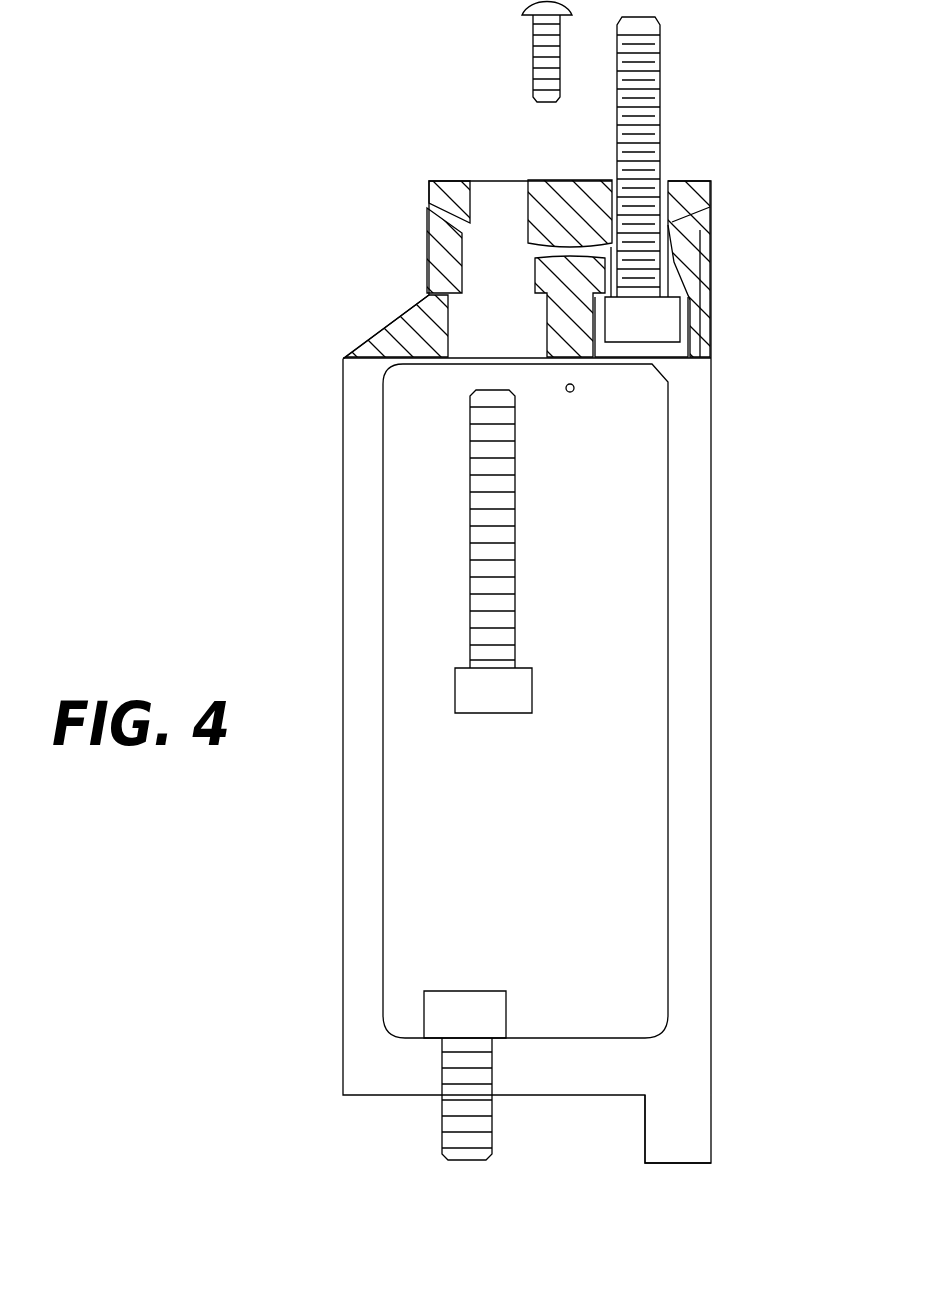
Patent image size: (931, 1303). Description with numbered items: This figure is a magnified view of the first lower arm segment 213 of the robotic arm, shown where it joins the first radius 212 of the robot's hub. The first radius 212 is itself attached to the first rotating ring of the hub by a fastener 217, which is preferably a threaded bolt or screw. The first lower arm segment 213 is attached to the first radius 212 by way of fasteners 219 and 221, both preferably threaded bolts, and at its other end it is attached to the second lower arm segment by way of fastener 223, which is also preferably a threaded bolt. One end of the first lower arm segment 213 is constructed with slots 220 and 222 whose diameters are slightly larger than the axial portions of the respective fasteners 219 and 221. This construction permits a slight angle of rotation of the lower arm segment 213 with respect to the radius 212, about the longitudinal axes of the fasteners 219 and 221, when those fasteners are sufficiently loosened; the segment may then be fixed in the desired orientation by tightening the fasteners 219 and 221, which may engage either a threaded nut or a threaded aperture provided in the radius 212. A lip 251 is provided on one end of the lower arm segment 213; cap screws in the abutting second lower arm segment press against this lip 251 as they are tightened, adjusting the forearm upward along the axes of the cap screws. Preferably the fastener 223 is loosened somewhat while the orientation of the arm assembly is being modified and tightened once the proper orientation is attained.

The first radius 212 is at (568, 180).
The first lower arm segment 213 is at (712, 751).
The fastener 217 is at (533, 45).
The fastener 219 is at (518, 513).
The slot 220 is at (457, 277).
The fastener 221 is at (660, 53).
The slot 222 is at (692, 262).
The fastener 223 is at (463, 991).
The lip 251 is at (712, 1138).